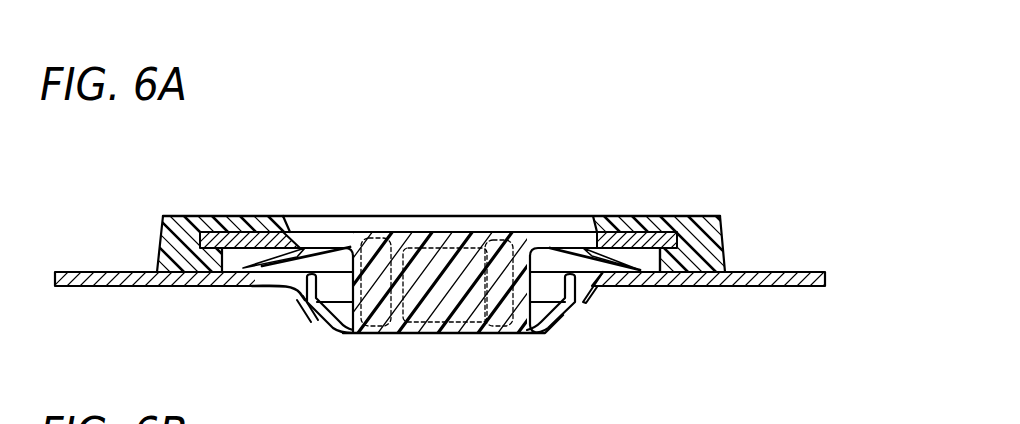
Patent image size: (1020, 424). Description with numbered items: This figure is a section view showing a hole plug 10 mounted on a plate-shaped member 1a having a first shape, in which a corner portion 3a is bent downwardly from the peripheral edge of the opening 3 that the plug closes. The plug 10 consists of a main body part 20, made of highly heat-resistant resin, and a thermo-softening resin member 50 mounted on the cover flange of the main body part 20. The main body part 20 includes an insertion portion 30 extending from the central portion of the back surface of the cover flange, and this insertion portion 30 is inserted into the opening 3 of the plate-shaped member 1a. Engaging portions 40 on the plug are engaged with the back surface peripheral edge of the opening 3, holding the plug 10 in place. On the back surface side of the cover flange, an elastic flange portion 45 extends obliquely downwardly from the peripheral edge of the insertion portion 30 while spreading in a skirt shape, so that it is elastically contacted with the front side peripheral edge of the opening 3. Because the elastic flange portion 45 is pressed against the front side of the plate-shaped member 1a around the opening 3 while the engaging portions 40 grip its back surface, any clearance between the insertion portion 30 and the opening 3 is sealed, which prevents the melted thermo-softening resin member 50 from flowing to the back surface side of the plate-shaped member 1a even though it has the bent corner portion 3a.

The hole plug 10 is at (638, 197).
The plate-shaped member 1a is at (105, 287).
The opening 3 is at (299, 304).
The corner portion 3a is at (289, 290).
The main body part 20 is at (369, 226).
The insertion portion 30 is at (503, 347).
The engaging portions 40 is at (314, 322).
The elastic flange portion 45 is at (285, 282).
The thermo-softening resin member 50 is at (251, 204).